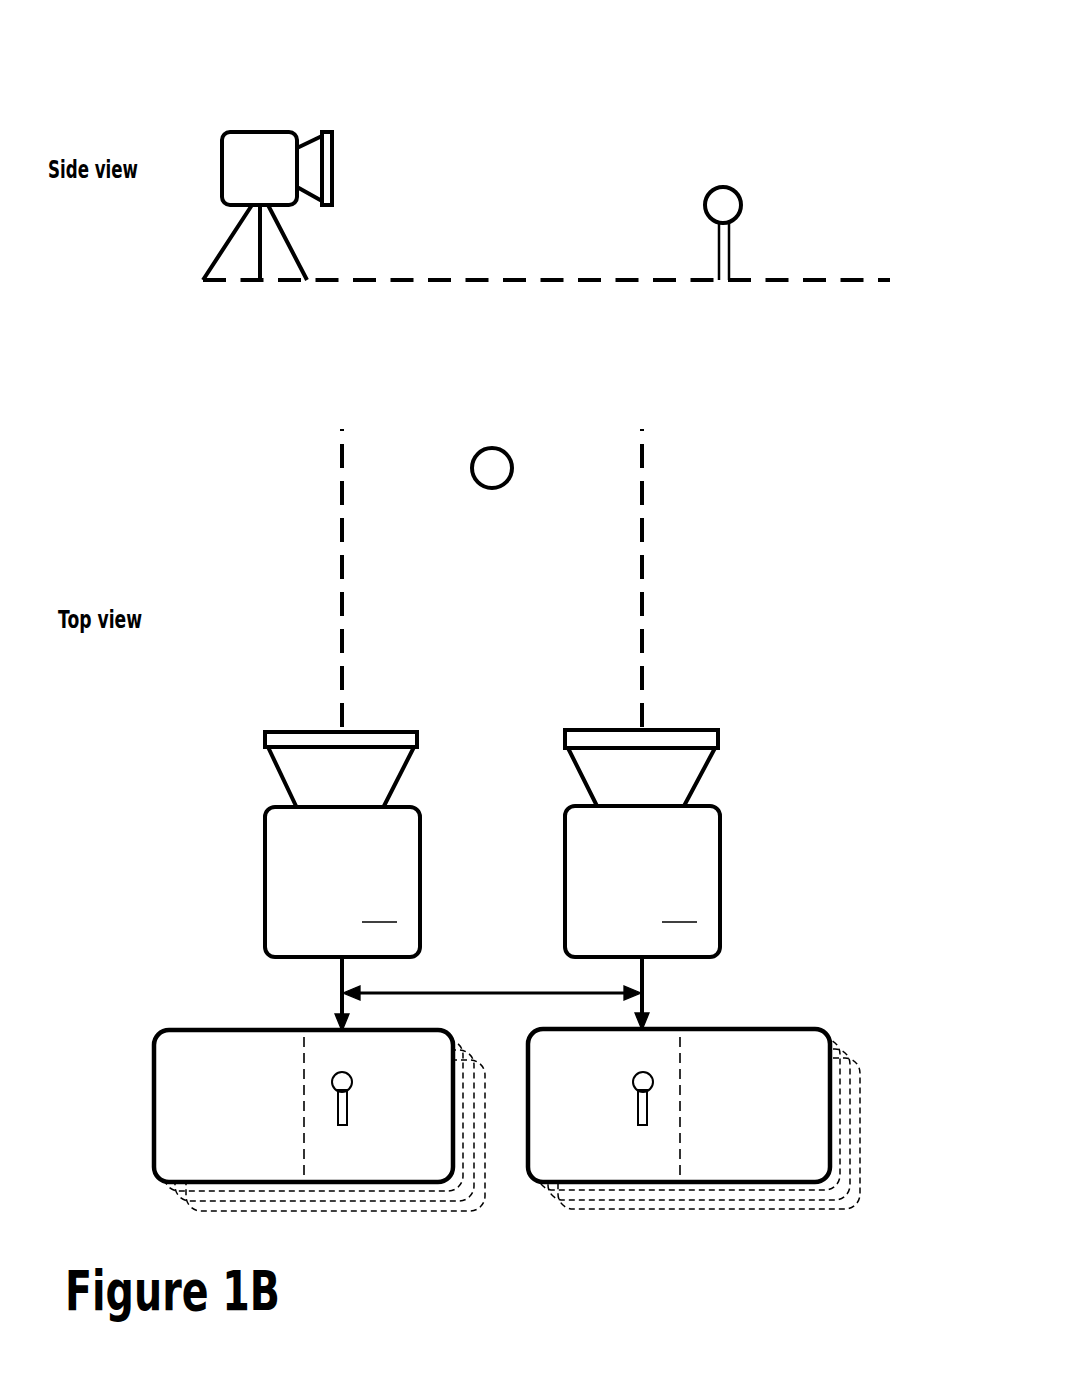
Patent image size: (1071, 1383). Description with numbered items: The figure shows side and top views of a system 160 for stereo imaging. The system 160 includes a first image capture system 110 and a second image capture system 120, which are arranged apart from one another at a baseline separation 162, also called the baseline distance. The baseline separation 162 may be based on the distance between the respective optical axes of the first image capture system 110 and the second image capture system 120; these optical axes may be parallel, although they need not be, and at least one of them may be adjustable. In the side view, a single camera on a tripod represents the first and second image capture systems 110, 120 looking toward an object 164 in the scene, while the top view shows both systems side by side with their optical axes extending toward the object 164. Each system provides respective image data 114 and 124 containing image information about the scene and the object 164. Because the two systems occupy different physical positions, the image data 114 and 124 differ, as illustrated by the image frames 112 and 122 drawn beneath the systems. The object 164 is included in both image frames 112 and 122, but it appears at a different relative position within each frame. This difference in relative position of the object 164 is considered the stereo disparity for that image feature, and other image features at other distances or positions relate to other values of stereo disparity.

The first image capture system 110 is at (252, 132).
The second image capture system 120 is at (642, 729).
The image frame 112 is at (152, 1062).
The image data 114 is at (180, 1193).
The image frame 122 is at (797, 1029).
The image data 124 is at (858, 1113).
The system 160 is at (853, 80).
The baseline separation 162 is at (470, 990).
The object 164 is at (742, 204).